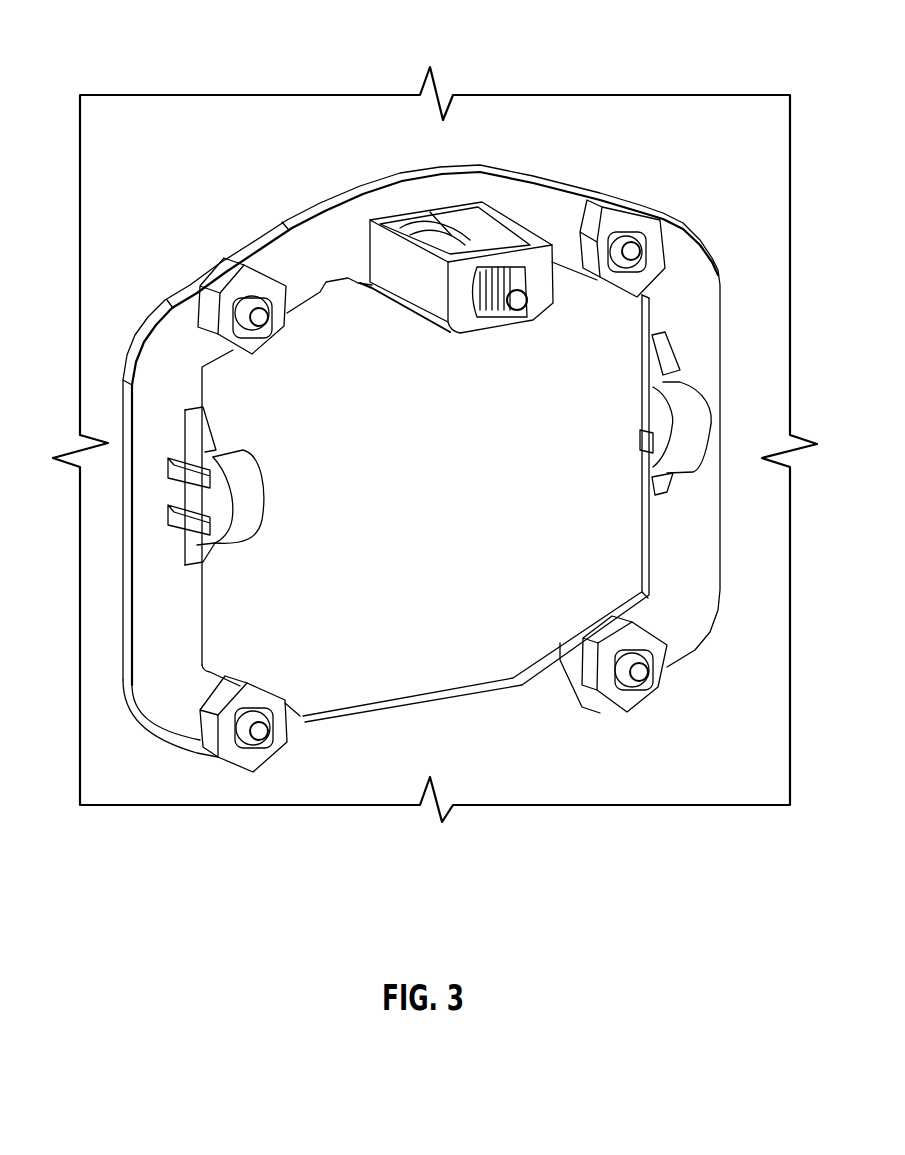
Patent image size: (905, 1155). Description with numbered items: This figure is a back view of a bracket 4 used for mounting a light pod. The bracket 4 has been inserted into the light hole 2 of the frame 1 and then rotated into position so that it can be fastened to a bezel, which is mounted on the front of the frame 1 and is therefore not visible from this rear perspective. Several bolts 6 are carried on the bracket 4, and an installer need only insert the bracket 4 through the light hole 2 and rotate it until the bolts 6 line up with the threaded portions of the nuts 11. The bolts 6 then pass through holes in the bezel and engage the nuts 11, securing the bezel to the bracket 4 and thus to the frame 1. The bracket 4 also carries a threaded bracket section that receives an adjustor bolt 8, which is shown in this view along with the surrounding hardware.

The frame 1 is at (230, 108).
The light hole 2 is at (490, 640).
The bracket 4 is at (690, 330).
The bolts 6 is at (633, 235).
The adjustor bolt 8 is at (515, 285).
The nuts 11 is at (638, 218).